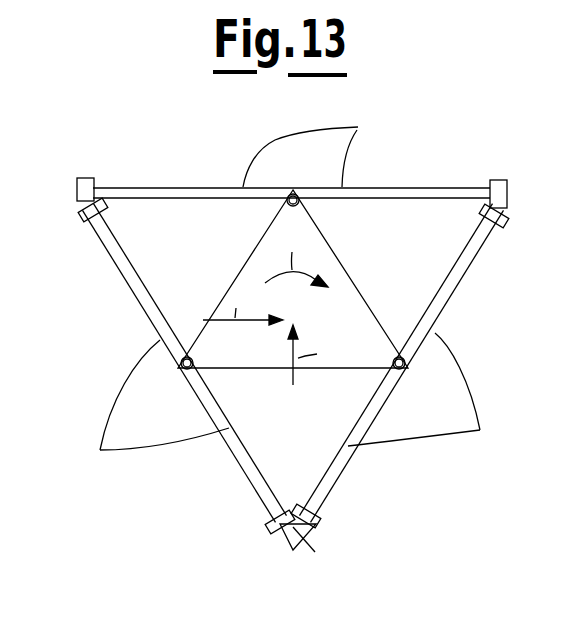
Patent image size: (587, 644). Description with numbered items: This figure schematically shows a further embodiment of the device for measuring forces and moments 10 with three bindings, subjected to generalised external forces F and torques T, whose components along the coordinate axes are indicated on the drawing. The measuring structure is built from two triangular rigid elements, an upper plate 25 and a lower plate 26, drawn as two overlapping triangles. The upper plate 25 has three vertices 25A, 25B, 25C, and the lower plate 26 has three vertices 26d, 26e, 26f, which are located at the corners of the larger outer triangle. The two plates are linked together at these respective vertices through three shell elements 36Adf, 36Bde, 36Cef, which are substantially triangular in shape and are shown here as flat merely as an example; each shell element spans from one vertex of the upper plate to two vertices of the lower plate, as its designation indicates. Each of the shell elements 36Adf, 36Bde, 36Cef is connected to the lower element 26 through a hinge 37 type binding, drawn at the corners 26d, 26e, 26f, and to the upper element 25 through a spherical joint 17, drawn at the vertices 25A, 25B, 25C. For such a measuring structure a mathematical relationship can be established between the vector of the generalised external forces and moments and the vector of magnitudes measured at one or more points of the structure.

The device for measuring forces and moments 10 is at (114, 101).
The spherical joint 17 is at (284, 203).
The upper plate 25 is at (350, 323).
The vertex of upper plate 25A is at (402, 366).
The vertex of upper plate 25B is at (178, 371).
The vertex of upper plate 25C is at (289, 191).
The lower plate 26 is at (416, 245).
The vertex of lower plate 26d is at (267, 552).
The vertex of lower plate 26e is at (72, 160).
The vertex of lower plate 26f is at (509, 165).
The shell element 36Adf is at (447, 401).
The shell element 36Bde is at (153, 417).
The shell element 36Cef is at (340, 152).
The hinge 37 is at (97, 182).